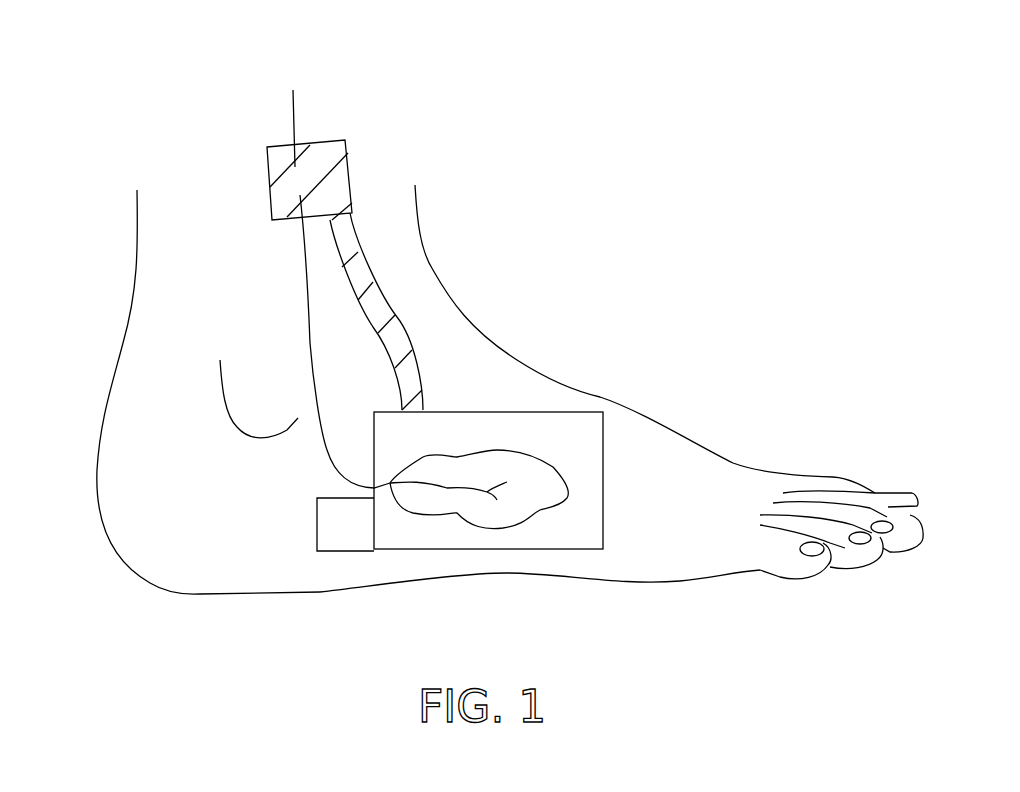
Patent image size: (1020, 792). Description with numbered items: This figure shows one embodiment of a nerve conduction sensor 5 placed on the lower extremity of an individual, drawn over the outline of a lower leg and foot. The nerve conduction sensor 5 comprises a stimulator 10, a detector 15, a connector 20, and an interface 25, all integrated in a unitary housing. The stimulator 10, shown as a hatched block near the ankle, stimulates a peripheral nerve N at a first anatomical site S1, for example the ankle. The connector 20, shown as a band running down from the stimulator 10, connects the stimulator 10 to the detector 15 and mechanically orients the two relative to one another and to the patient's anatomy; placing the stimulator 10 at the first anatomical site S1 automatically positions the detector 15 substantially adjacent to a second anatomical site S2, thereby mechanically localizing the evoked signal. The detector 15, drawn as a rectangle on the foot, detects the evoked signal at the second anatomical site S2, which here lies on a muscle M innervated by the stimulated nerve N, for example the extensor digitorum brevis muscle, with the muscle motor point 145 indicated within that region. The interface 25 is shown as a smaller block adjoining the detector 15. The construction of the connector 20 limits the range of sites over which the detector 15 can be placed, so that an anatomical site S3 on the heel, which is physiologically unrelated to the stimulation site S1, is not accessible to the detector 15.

The nerve conduction sensor 5 is at (553, 272).
The stimulator 10 is at (355, 174).
The detector 15 is at (610, 438).
The connector 20 is at (413, 315).
The interface 25 is at (307, 547).
The muscle motor point 145 is at (498, 472).
The peripheral nerve N is at (283, 112).
The muscle M is at (470, 528).
The first anatomical site S1 is at (262, 192).
The second anatomical site S2 is at (548, 557).
The anatomical site S3 is at (150, 525).